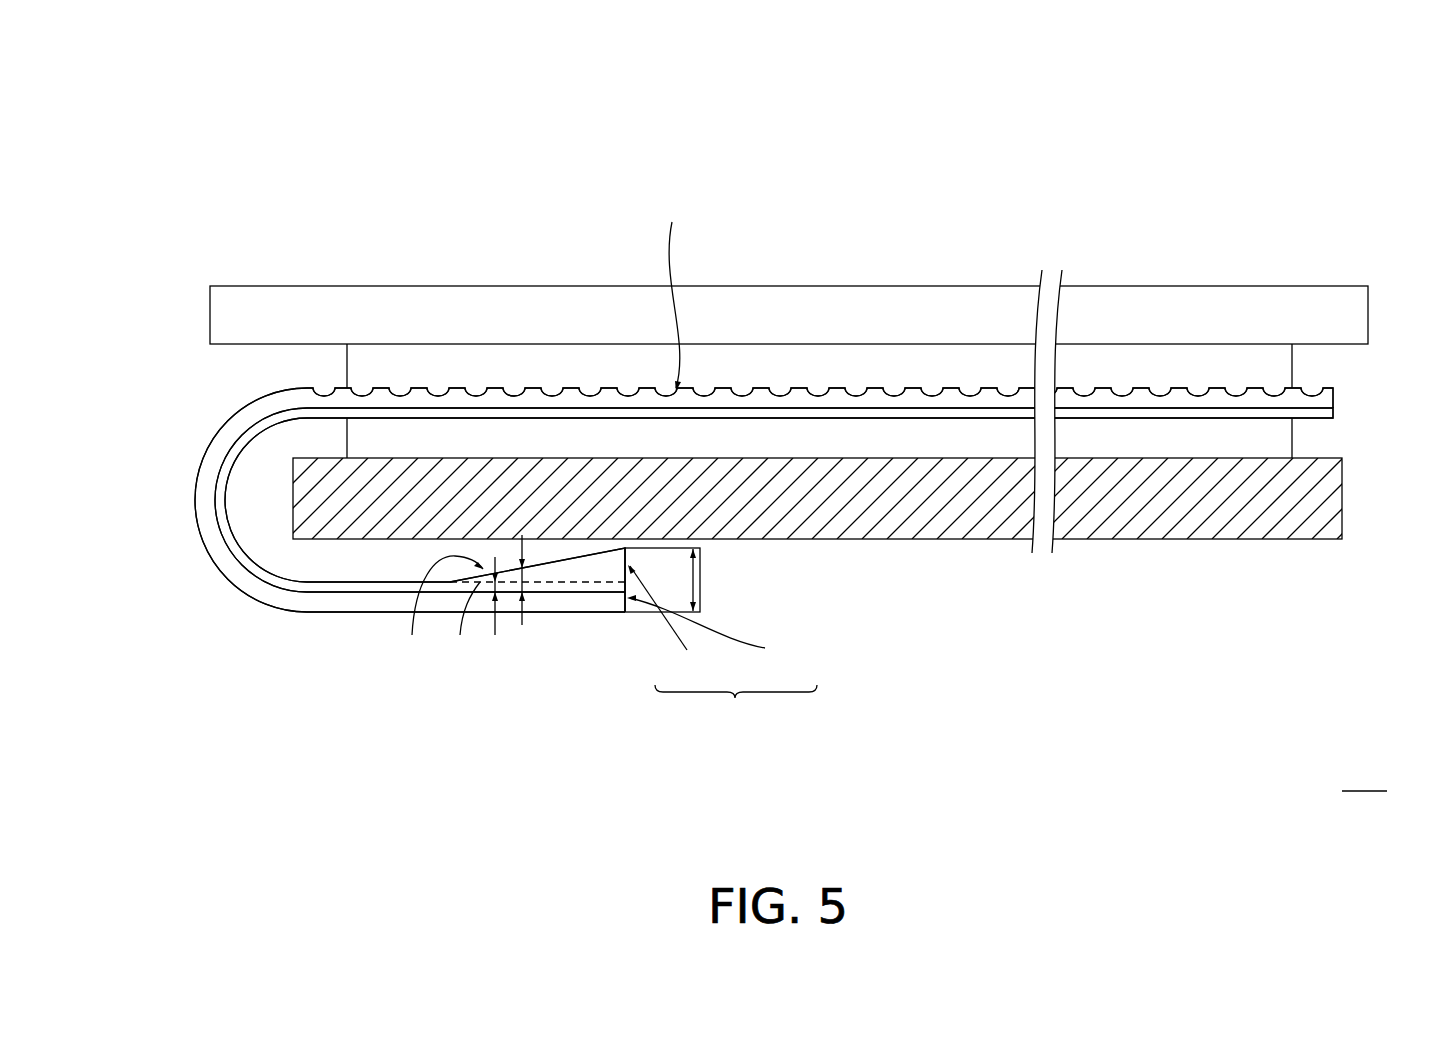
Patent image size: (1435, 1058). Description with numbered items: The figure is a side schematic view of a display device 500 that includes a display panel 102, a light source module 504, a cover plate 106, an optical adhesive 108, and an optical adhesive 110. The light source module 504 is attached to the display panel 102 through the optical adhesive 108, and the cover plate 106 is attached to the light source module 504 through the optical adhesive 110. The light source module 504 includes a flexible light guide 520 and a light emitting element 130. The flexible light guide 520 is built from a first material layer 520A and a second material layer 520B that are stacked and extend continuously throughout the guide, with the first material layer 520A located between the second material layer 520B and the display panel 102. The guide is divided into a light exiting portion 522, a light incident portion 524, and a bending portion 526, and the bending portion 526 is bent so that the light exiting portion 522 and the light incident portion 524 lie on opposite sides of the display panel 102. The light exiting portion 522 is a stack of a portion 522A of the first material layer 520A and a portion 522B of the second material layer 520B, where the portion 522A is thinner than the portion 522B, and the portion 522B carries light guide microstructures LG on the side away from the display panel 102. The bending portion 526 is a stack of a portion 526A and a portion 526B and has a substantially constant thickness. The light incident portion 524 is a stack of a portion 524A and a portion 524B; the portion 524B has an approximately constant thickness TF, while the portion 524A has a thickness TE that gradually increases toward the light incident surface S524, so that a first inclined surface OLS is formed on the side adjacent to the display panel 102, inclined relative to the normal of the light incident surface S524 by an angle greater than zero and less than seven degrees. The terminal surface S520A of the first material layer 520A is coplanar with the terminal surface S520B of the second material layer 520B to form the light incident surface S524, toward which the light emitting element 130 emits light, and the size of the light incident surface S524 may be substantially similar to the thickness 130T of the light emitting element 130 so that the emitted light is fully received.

The display device 500 is at (1364, 775).
The light source module 504 is at (200, 70).
The flexible light guide 520 is at (267, 32).
The first material layer 520A is at (774, 317).
The second material layer 520B is at (764, 347).
The light emitting element 130 is at (730, 605).
The thickness of the light emitting element 130T is at (700, 568).
The light exiting portion 522 is at (583, 142).
The portion of the first material layer 522A is at (566, 413).
The portion of the second material layer 522B is at (465, 388).
The light incident portion 524 is at (648, 768).
The portion of the first material layer 524A is at (603, 568).
The portion of the second material layer 524B is at (538, 600).
The bending portion 526 is at (118, 300).
The portion of the first material layer 526A is at (235, 440).
The portion of the second material layer 526B is at (220, 455).
The light guide microstructures LG is at (670, 289).
The cover plate 106 is at (1360, 318).
The optical adhesive 110 is at (1273, 370).
The optical adhesive 108 is at (1273, 437).
The display panel 102 is at (1327, 500).
The first inclined surface OLS is at (433, 619).
The thickness TF is at (482, 620).
The thickness TE is at (519, 609).
The terminal surface of the first material layer S520A is at (723, 640).
The terminal surface of the second material layer S520B is at (678, 625).
The light incident surface S524 is at (736, 708).